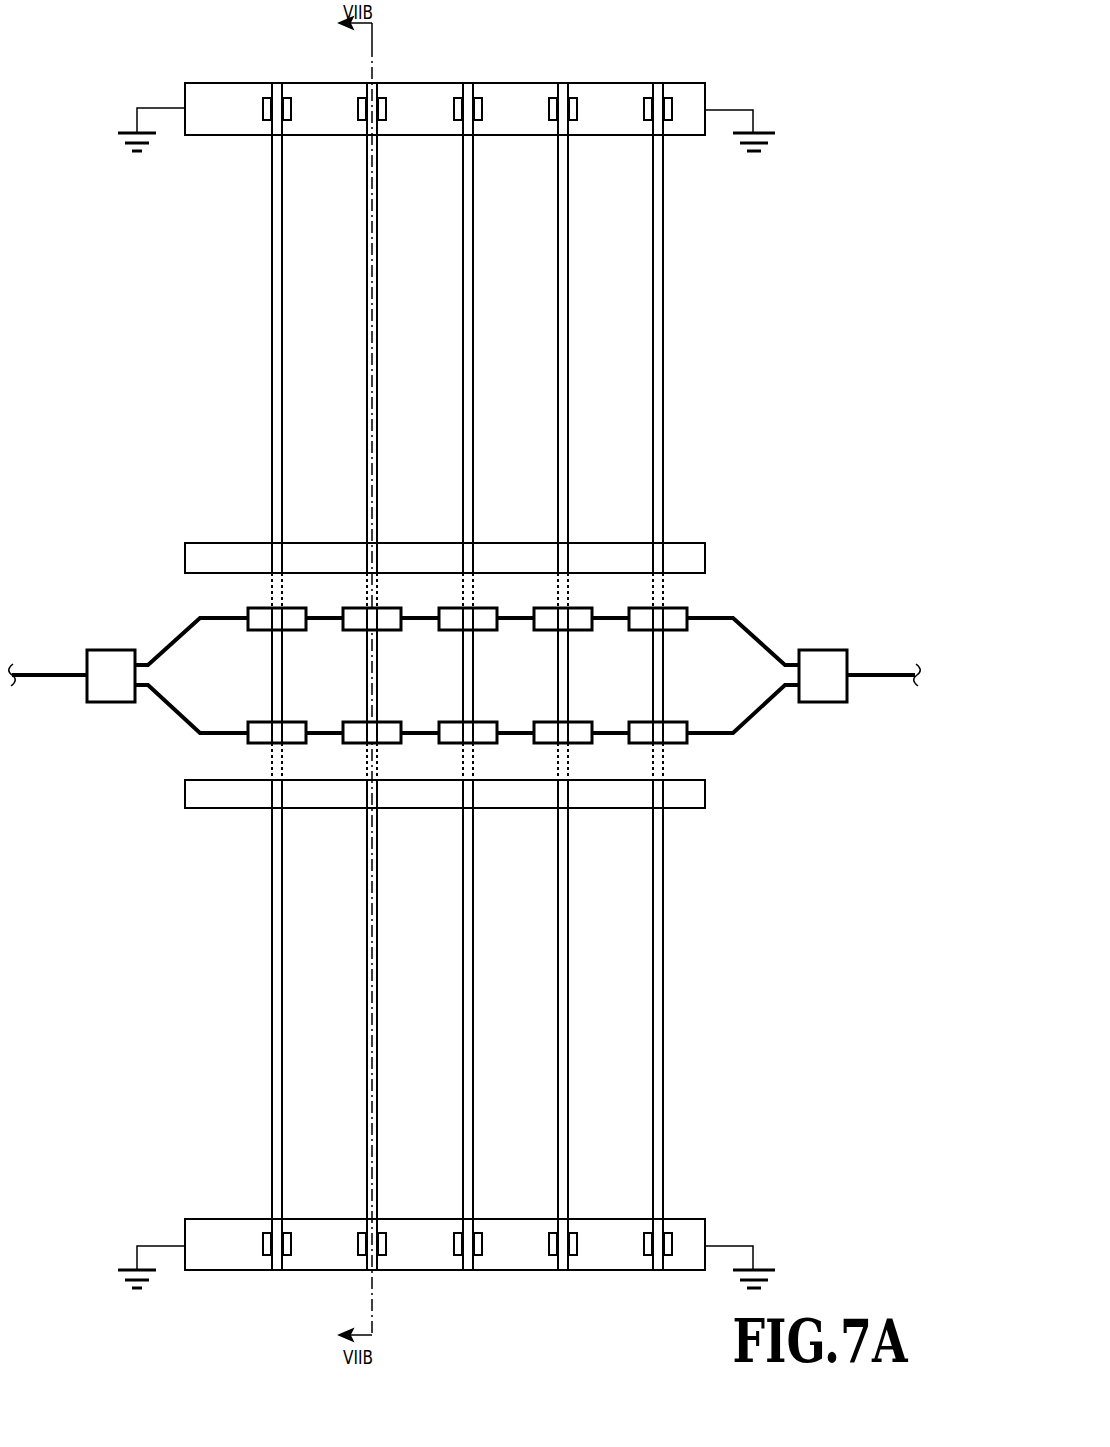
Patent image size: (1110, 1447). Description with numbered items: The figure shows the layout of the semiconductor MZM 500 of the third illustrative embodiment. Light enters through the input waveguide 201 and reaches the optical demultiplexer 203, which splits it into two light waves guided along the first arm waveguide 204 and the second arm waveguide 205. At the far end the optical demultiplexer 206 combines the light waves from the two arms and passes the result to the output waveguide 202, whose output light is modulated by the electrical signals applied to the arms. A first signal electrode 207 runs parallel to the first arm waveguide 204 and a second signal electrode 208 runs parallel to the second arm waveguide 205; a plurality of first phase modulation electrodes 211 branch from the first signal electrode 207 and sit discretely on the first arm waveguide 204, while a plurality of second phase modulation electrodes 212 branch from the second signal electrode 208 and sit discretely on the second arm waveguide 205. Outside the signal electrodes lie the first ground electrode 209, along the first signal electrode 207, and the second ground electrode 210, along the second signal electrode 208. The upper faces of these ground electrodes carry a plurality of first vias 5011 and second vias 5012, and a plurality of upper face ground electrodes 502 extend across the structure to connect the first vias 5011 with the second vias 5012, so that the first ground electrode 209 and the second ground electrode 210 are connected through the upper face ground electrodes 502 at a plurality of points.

The semiconductor MZM 500 is at (825, 128).
The input waveguide 201 is at (53, 672).
The output waveguide 202 is at (885, 672).
The optical demultiplexer 203 is at (117, 648).
The first arm waveguide 204 is at (175, 640).
The second arm waveguide 205 is at (175, 717).
The optical demultiplexer 206 is at (827, 648).
The first signal electrode 207 is at (698, 562).
The second signal electrode 208 is at (706, 788).
The first ground electrode 209 is at (705, 90).
The second ground electrode 210 is at (705, 1222).
The first phase modulation electrodes 211 is at (452, 623).
The second phase modulation electrodes 212 is at (550, 728).
The first vias 5011 is at (649, 97).
The second vias 5012 is at (649, 1257).
The upper face ground electrodes 502 is at (653, 232).